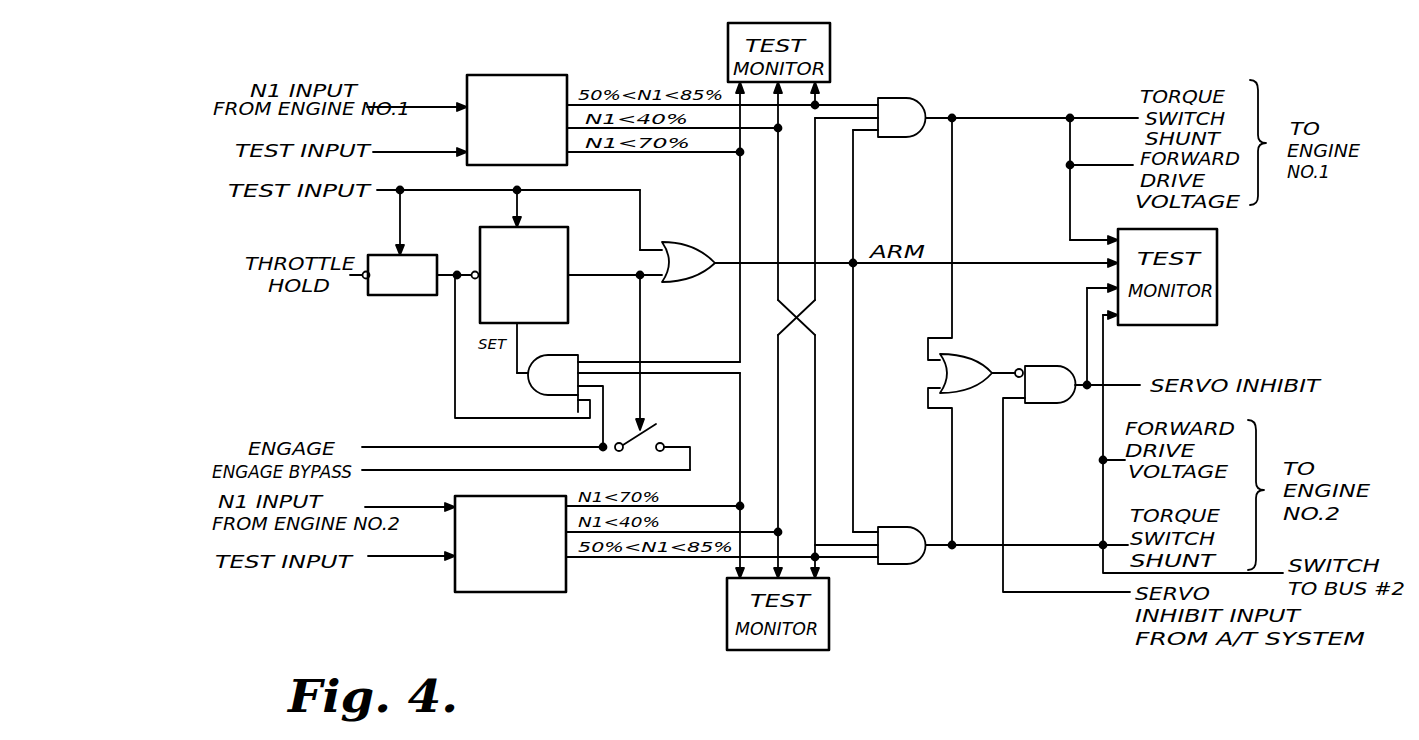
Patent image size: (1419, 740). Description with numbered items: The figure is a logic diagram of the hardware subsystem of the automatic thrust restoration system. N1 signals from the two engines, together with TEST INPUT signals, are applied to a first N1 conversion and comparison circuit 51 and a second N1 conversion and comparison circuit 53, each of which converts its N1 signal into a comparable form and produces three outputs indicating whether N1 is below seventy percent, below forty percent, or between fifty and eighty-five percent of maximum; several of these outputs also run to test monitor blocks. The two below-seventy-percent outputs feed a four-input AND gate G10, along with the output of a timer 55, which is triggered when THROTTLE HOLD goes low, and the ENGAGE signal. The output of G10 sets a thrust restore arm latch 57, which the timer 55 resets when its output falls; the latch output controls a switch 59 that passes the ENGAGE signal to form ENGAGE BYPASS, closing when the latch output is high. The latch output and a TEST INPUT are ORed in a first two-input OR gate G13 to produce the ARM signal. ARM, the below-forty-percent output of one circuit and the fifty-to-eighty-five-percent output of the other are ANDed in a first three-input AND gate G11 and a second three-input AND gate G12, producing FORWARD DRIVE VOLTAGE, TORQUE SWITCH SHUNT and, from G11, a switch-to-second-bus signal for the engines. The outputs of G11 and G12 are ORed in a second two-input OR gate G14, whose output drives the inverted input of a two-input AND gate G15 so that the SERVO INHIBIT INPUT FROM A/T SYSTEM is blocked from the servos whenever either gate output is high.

The first N1 conversion and comparison circuit 51 is at (565, 76).
The second N1 conversion and comparison circuit 53 is at (566, 590).
The timer 55 is at (424, 255).
The thrust restore arm latch 57 is at (566, 231).
The switch 59 is at (656, 430).
The four-input AND gate G10 is at (571, 357).
The first three-input AND gate G11 is at (884, 527).
The second three-input AND gate G12 is at (900, 99).
The first two-input OR gate G13 is at (690, 247).
The second two-input OR gate G14 is at (976, 358).
The two-input AND gate G15 is at (1046, 403).